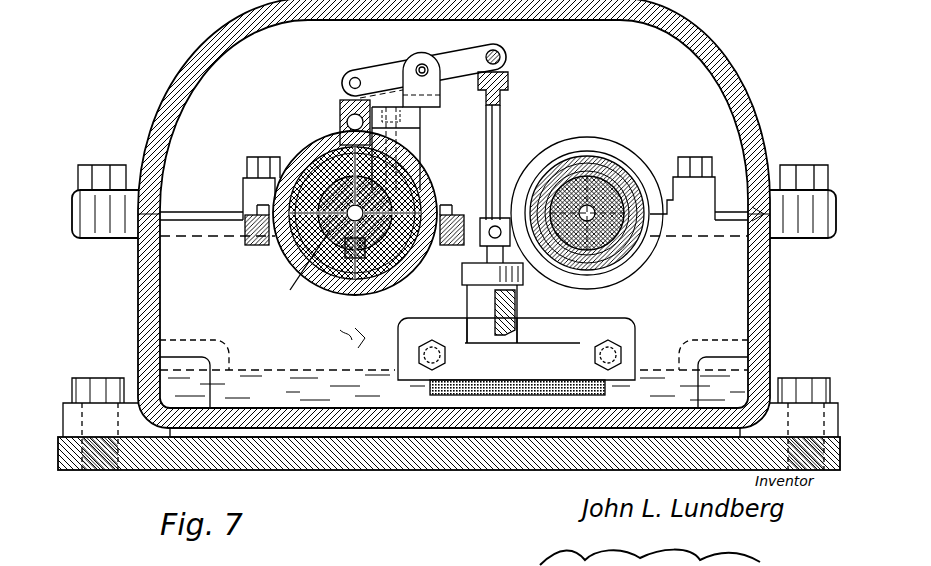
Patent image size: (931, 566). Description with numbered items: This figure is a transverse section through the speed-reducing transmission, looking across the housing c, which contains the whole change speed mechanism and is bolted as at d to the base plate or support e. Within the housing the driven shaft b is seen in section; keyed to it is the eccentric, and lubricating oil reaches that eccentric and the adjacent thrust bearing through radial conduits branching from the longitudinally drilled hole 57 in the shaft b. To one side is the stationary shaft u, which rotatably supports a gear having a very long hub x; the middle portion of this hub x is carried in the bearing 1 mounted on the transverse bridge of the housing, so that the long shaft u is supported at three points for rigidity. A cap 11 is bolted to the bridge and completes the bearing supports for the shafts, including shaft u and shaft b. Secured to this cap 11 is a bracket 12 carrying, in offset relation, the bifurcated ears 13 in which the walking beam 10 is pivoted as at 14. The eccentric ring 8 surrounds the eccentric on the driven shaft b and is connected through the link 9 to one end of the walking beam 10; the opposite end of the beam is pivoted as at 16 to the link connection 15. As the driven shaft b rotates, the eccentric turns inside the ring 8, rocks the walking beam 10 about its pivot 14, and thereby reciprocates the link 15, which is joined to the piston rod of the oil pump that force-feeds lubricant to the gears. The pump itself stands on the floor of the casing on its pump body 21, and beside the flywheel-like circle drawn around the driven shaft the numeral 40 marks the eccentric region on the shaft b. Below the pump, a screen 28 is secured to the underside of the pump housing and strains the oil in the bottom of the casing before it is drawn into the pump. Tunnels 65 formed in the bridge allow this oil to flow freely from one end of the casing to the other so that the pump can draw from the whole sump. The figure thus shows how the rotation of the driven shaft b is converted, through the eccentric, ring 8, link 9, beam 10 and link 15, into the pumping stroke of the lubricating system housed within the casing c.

The bearing 1 is at (606, 272).
The eccentric ring 8 is at (330, 296).
The link 9 is at (345, 106).
The walking beam 10 is at (385, 68).
The cap 11 is at (250, 180).
The bracket 12 is at (425, 122).
The bifurcated ears 13 is at (432, 48).
The pivot 14 is at (432, 72).
The link connection 15 is at (504, 112).
The pivot 16 is at (500, 58).
The pedestal base 21 is at (503, 383).
The screen 28 is at (430, 393).
The flywheel 40 is at (604, 195).
The longitudinally drilled hole 57 is at (282, 258).
The tunnels 65 is at (193, 392).
The driven shaft b is at (335, 262).
The housing c is at (770, 268).
The bolts d is at (97, 370).
The base plate e is at (513, 460).
The stationary shaft u is at (636, 246).
The hub x is at (617, 264).